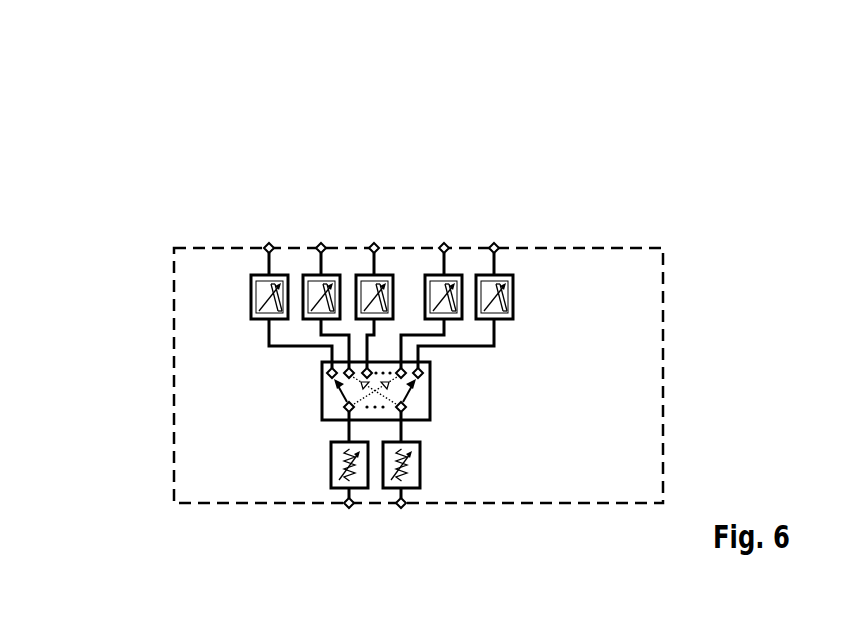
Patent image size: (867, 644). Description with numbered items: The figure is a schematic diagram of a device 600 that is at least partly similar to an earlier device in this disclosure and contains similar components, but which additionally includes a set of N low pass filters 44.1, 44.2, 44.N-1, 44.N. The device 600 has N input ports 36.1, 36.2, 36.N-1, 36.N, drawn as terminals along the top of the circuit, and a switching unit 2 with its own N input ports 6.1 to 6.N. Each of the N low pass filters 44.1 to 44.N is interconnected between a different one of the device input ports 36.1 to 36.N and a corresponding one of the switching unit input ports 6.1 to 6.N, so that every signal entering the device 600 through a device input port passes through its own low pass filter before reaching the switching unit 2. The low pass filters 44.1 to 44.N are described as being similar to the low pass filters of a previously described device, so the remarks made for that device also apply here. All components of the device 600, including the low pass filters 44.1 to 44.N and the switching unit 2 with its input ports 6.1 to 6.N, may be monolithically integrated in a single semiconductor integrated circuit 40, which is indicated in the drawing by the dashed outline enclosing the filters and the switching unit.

The device 600 is at (143, 88).
The single semiconductor integrated circuit 40 is at (663, 288).
The first input port of the device 36.1 is at (266, 245).
The second input port of the device 36.2 is at (325, 246).
The (N-1)th input port of the device 36.N-1 is at (443, 246).
The Nth input port of the device 36.N is at (496, 246).
The first low pass filter 44.1 is at (251, 292).
The second low pass filter 44.2 is at (303, 289).
The (N-1)th low pass filter 44.N-1 is at (450, 275).
The Nth low pass filter 44.N is at (513, 294).
The switching unit 2 is at (430, 408).
The first input port of the switching unit 6.1 is at (328, 377).
The Nth input port of the switching unit 6.N is at (421, 371).